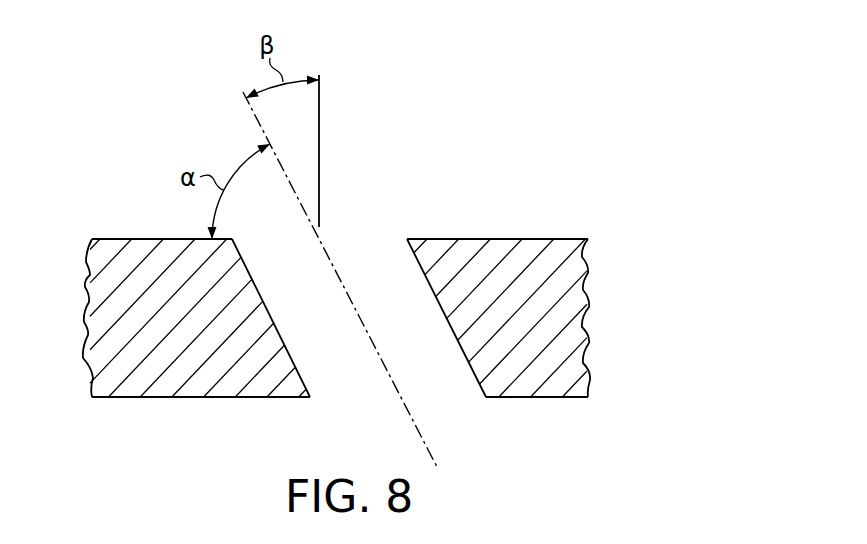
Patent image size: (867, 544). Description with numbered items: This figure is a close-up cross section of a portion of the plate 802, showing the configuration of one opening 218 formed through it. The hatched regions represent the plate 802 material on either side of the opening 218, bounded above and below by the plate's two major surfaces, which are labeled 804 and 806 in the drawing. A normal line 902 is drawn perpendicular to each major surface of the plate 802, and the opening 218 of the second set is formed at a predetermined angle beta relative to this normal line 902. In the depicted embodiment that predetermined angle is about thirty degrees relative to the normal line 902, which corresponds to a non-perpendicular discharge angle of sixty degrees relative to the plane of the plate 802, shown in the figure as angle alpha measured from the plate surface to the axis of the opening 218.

The plate 802 is at (342, 319).
The top surface of substrate 804 is at (452, 240).
The bottom surface of substrate 806 is at (535, 398).
The opening 218 is at (367, 246).
The normal line 902 is at (319, 127).